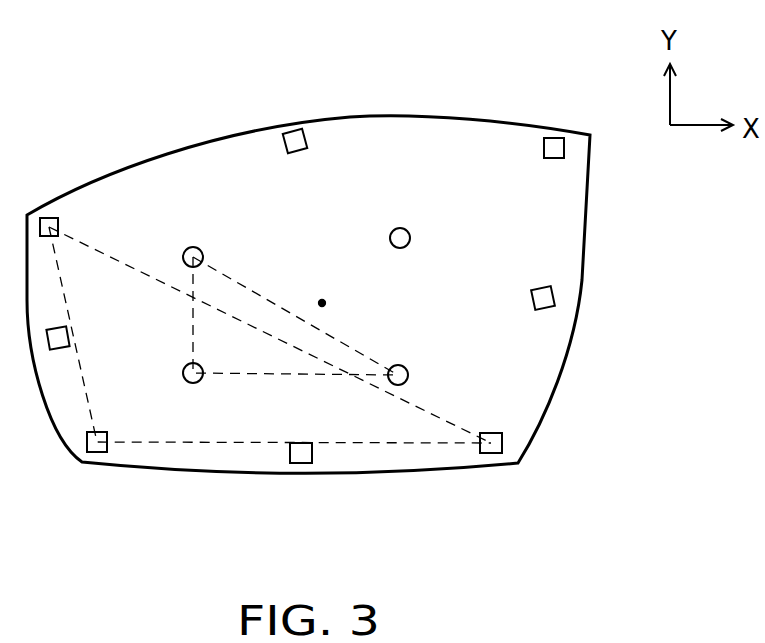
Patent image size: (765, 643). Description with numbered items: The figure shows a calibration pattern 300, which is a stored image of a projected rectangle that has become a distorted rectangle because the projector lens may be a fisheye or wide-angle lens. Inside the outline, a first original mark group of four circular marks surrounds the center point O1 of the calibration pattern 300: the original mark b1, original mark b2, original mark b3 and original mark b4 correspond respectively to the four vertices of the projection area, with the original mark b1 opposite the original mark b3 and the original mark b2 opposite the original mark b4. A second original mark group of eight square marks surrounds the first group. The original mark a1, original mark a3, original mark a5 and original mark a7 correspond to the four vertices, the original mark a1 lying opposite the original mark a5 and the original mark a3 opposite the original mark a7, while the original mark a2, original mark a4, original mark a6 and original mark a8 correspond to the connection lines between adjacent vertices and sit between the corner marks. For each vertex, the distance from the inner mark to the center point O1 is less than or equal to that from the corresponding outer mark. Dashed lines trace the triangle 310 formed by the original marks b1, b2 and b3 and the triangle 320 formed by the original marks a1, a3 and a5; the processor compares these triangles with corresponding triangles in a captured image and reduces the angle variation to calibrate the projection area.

The calibration pattern 300 is at (401, 469).
The triangle 310 is at (265, 293).
The triangle 320 is at (132, 265).
The original mark a1 is at (65, 233).
The original mark a2 is at (72, 340).
The original mark a3 is at (113, 431).
The original mark a4 is at (303, 439).
The original mark a5 is at (489, 430).
The original mark a6 is at (544, 286).
The original mark a7 is at (553, 166).
The original mark a8 is at (302, 155).
The original mark b1 is at (196, 245).
The original mark b2 is at (194, 391).
The original mark b3 is at (415, 379).
The original mark b4 is at (416, 241).
The center point O1 is at (339, 306).